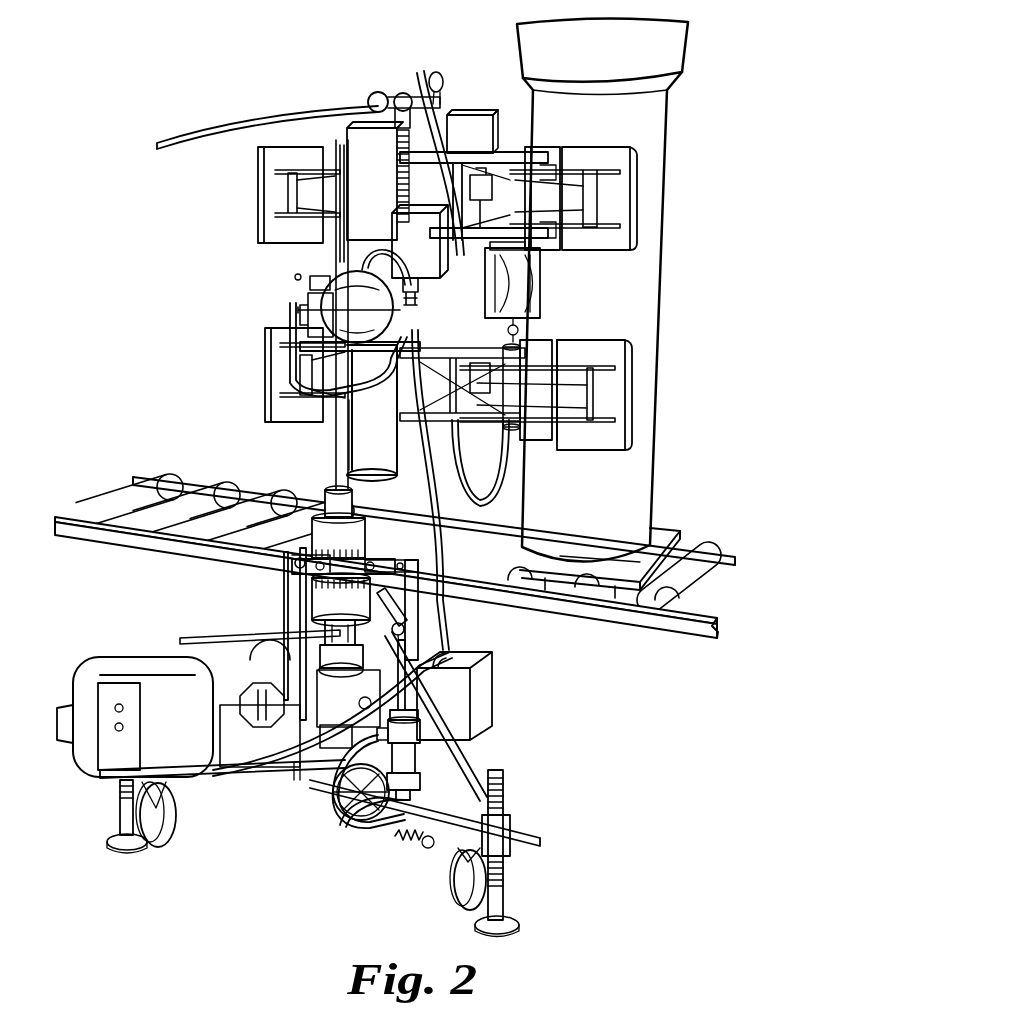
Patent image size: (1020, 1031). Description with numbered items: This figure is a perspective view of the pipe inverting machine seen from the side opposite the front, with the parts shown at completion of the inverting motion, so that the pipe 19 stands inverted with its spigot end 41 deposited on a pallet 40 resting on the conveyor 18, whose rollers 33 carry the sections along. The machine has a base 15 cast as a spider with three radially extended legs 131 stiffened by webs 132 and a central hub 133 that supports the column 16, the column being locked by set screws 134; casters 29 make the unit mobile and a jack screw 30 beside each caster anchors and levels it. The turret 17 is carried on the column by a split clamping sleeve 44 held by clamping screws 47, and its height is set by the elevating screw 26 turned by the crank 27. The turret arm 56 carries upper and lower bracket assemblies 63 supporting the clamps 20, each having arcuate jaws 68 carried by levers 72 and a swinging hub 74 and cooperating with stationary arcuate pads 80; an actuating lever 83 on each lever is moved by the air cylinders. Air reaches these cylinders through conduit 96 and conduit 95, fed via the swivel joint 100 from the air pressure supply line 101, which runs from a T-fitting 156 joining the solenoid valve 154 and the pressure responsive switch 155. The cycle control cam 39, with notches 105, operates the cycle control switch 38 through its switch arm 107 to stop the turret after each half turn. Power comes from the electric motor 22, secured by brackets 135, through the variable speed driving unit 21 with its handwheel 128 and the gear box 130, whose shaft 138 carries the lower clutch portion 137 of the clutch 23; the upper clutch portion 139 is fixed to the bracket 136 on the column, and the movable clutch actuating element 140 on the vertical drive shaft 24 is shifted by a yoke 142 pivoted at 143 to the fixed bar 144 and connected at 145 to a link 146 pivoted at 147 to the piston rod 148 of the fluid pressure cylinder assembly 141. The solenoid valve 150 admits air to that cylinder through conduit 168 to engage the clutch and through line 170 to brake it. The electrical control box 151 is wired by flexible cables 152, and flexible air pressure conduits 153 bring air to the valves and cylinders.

The base 15 is at (476, 758).
The column 16 is at (360, 450).
The clamp mounting fixture or turret 17 is at (472, 113).
The conveyor 18 is at (690, 634).
The pipe 19 is at (650, 300).
The clamps 20 is at (648, 197).
The variable speed driving unit 21 is at (246, 762).
The electric motor 22 is at (125, 665).
The clutch 23 is at (316, 484).
The vertical drive shaft 24 is at (340, 433).
The elevating screw 26 is at (400, 158).
The crank 27 is at (437, 72).
The casters 29 is at (157, 832).
The jack screw 30 is at (122, 806).
The conveyor roller 33 is at (108, 508).
The cycle control switch 38 is at (310, 305).
The cycle control cam 39 is at (360, 320).
The pallet 40 is at (668, 533).
The spigot end 41 is at (610, 560).
The clamping sleeve 44 is at (480, 275).
The clamping screws 47 is at (522, 262).
The turret arm 56 is at (493, 130).
The bracket assemblies 63 is at (510, 157).
The jaws 68 is at (614, 160).
The levers 72 is at (315, 208).
The swinging hub 74 is at (290, 200).
The stationary arcuate pads 80 is at (548, 155).
The actuating lever 83 is at (488, 205).
The conduit 95 is at (520, 318).
The conduit 96 is at (425, 118).
The swivel joint 100 is at (308, 312).
The air pressure supply line 101 is at (375, 262).
The notches 105 is at (398, 351).
The switch arm 107 is at (318, 280).
The handwheel 128 is at (242, 760).
The gear box 130 is at (334, 725).
The legs 131 is at (294, 765).
The webs 132 is at (505, 770).
The central hub 133 is at (420, 587).
The set screws 134 is at (358, 630).
The brackets 135 is at (195, 642).
The bracket 136 is at (372, 480).
The lower clutch portion 137 is at (325, 607).
The shaft 138 is at (302, 700).
The upper clutch portion 139 is at (349, 555).
The movable clutch actuating element 140 is at (383, 560).
The fluid pressure cylinder assembly 141 is at (418, 772).
The yoke 142 is at (306, 563).
The pivot 143 is at (283, 558).
The fixed bar 144 is at (298, 587).
The pivotal connection 145 is at (425, 563).
The link 146 is at (410, 612).
The pivotal connection 147 is at (406, 630).
The piston rod 148 is at (406, 692).
The solenoid valve 150 is at (422, 846).
The electrical control box 151 is at (470, 717).
The flexible cables 152 is at (363, 392).
The flexible air pressure conduits 153 is at (220, 128).
The solenoid valve 154 is at (470, 288).
The pressure responsive switch 155 is at (395, 225).
The T-fitting 156 is at (420, 280).
The conduit 168 is at (335, 825).
The line 170 is at (378, 825).